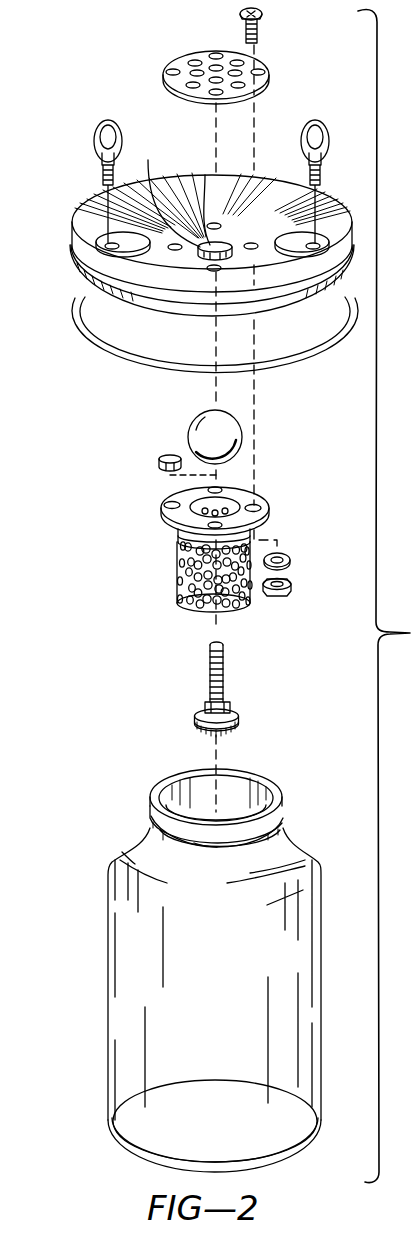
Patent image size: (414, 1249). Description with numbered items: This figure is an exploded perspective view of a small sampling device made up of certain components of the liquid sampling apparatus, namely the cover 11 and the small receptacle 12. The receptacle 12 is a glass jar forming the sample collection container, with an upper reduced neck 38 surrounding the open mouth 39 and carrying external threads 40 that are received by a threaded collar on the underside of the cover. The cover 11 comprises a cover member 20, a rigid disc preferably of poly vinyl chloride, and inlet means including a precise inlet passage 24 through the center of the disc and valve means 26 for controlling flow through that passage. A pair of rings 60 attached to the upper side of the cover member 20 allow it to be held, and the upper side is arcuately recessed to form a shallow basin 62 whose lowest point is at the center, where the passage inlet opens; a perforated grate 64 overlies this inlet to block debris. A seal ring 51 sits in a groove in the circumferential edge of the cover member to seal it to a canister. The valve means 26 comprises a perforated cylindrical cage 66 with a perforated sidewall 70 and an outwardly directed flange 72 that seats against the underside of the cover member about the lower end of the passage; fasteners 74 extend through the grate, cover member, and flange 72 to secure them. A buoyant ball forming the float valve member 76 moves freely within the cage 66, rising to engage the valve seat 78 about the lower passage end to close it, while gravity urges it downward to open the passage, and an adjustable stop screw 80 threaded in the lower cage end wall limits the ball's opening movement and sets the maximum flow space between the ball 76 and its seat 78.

The cover 11 is at (96, 194).
The receptacle 12 is at (110, 989).
The cover member 20 is at (73, 257).
The inlet passage 24 is at (165, 191).
The valve means 26 is at (157, 490).
The neck 38 is at (156, 795).
The open mouth 39 is at (238, 782).
The external threads 40 is at (290, 824).
The seal ring 51 is at (80, 334).
The rings 60 is at (104, 126).
The basin 62 is at (271, 190).
The perforated grate 64 is at (180, 55).
The perforated cylindrical cage 66 is at (177, 598).
The perforated cylindrical sidewall 70 is at (177, 566).
The flange 72 is at (162, 508).
The fasteners 74 is at (264, 18).
The float valve member 76 is at (192, 425).
The valve seat 78 is at (72, 268).
The adjustable stop screw 80 is at (208, 690).